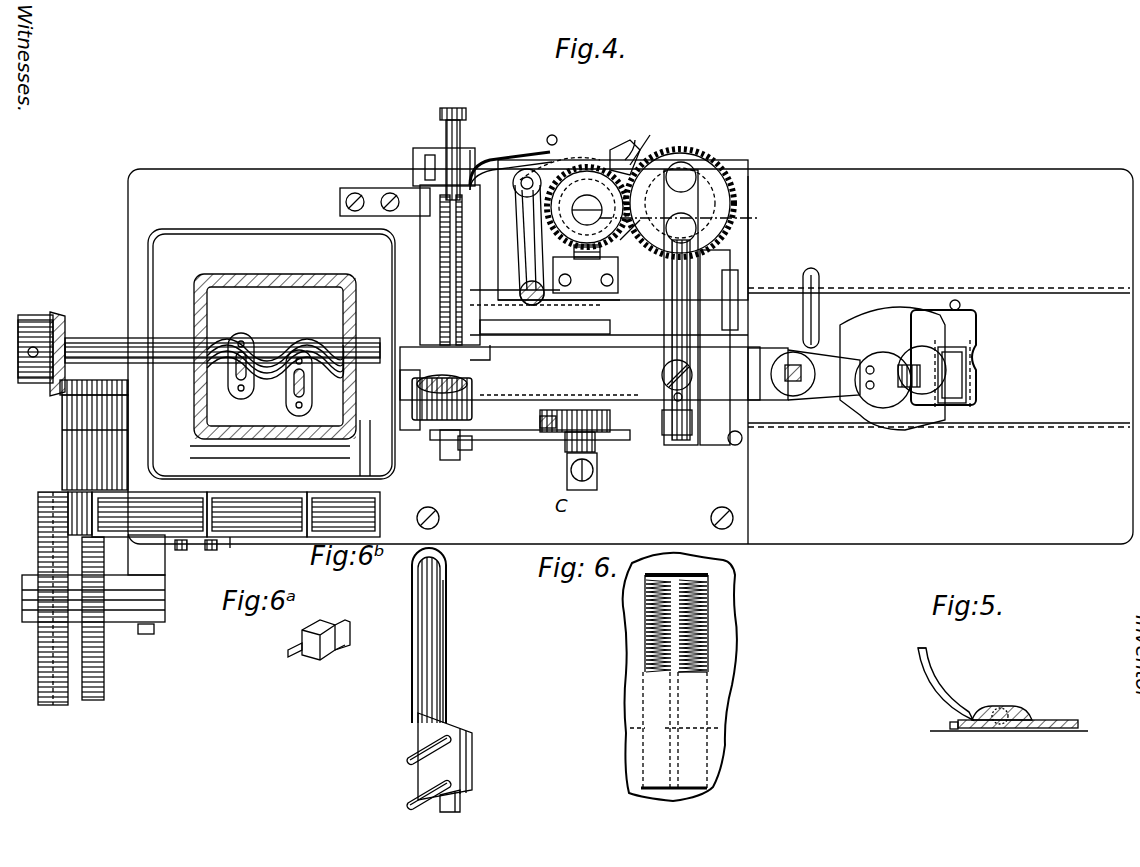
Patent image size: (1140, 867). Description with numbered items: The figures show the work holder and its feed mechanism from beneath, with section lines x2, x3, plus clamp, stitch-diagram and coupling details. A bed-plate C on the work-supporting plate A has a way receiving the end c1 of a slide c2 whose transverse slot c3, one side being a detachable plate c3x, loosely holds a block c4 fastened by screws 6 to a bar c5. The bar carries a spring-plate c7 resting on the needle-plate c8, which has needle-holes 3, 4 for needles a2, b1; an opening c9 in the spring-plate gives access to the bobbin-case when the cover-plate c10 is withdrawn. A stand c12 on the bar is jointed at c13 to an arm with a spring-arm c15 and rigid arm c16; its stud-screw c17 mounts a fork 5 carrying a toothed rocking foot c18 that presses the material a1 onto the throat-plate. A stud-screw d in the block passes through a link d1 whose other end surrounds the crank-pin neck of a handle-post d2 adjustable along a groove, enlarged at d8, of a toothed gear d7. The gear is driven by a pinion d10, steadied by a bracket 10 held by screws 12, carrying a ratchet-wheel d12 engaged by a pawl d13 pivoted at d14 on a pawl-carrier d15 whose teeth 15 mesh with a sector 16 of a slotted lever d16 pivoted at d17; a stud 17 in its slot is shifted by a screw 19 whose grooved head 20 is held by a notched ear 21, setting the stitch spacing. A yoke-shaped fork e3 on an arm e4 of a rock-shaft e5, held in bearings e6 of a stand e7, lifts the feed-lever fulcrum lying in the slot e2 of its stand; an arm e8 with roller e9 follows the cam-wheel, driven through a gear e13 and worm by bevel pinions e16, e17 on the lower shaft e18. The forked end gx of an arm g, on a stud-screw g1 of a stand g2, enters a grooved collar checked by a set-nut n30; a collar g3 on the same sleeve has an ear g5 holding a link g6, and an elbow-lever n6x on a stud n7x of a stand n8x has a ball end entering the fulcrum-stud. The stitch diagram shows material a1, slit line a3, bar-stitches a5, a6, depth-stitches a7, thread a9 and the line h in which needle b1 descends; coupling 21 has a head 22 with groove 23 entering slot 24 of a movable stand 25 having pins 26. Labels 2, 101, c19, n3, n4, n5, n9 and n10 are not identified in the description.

In FIG. 4, the work-supporting plate A is at (855, 180).
In FIG. 4, the bed-plate C is at (390, 240).
In FIG. 4, the top plate 2 is at (612, 302).
In FIG. 4, the needle-hole 3 is at (948, 360).
In FIG. 4, the needle-hole 4 is at (956, 367).
In FIG. 4, the fork 5 is at (920, 410).
In FIG. 5, the fork 5 is at (932, 672).
In FIG. 4, the screw 6 is at (674, 397).
In FIG. 4, the bracket 10 is at (587, 263).
In FIG. 4, the screw 12 is at (595, 276).
In FIG. 4, the teeth 15 is at (588, 200).
In FIG. 4, the sector 16 is at (518, 235).
In FIG. 4, the stud 17 is at (534, 182).
In FIG. 4, the screw 19 is at (452, 108).
In FIG. 4, the annular groove 20 is at (468, 152).
In FIG. 4, the movable coupling 21 is at (437, 150).
In FIG. 6a, the movable coupling 21 is at (302, 640).
In FIG. 6a, the head 22 is at (345, 622).
In FIG. 6a, the groove 23 is at (338, 652).
In FIG. 6b, the slot 24 is at (432, 630).
In FIG. 6b, the movable stand 25 is at (448, 680).
In FIG. 6b, the pins 26 is at (408, 758).
In FIG. 4, the screws 101 is at (440, 518).
In FIG. 4, the stud-screw d is at (662, 378).
In FIG. 4, the link d1 is at (690, 290).
In FIG. 4, the handle-post d2 is at (650, 245).
In FIG. 4, the toothed gear d7 is at (682, 150).
In FIG. 4, the enlargement of groove d8 is at (690, 165).
In FIG. 4, the pinion d10 is at (613, 152).
In FIG. 4, the ratchet-wheel d12 is at (625, 237).
In FIG. 4, the pawl d13 is at (580, 165).
In FIG. 4, the pivot d14 is at (644, 131).
In FIG. 4, the pawl-carrier d15 is at (618, 150).
In FIG. 4, the slotted lever d16 is at (690, 222).
In FIG. 4, the pivot d17 is at (520, 307).
In FIG. 4, the end of slide c1 is at (580, 373).
In FIG. 5, the end of slide c1 is at (955, 731).
In FIG. 4, the slide c2 is at (545, 155).
In FIG. 4, the transverse slot c3 is at (705, 440).
In FIG. 4, the detachable plate c3x is at (735, 446).
In FIG. 4, the block c4 is at (677, 422).
In FIG. 4, the bar c5 is at (725, 300).
In FIG. 4, the spring-plate c7 is at (892, 318).
In FIG. 4, the needle-plate c8 is at (958, 300).
In FIG. 4, the opening c9 is at (878, 400).
In FIG. 4, the cover-plate c10 is at (848, 296).
In FIG. 4, the stand c12 is at (765, 348).
In FIG. 4, the joint c13 is at (762, 395).
In FIG. 4, the spring-arm c15 is at (835, 350).
In FIG. 4, the rigid arm c16 is at (900, 365).
In FIG. 4, the stud-screw c17 is at (972, 374).
In FIG. 4, the rocking open-centered foot c18 is at (972, 362).
In FIG. 5, the cam c19 is at (1028, 712).
In FIG. 4, the slot e2 is at (95, 442).
In FIG. 4, the fork e3 is at (405, 372).
In FIG. 4, the arm e4 is at (367, 435).
In FIG. 4, the rock-shaft e5 is at (257, 500).
In FIG. 4, the bearings e6 is at (170, 492).
In FIG. 4, the stand e7 is at (255, 538).
In FIG. 4, the arm e8 is at (60, 492).
In FIG. 4, the roller e9 is at (332, 500).
In FIG. 4, the gear e13 is at (106, 550).
In FIG. 4, the beveled pinion e16 is at (60, 395).
In FIG. 4, the bevel-pinion e17 is at (62, 318).
In FIG. 4, the lower shaft e18 is at (95, 330).
In FIG. 4, the arm g is at (530, 440).
In FIG. 4, the forked end gx is at (462, 450).
In FIG. 4, the stud-screw g1 is at (565, 450).
In FIG. 4, the stand g2 is at (598, 470).
In FIG. 4, the collar g3 is at (608, 418).
In FIG. 4, the ear g5 is at (542, 420).
In FIG. 4, the link g6 is at (548, 415).
In FIG. 4, the column n3 is at (428, 445).
In FIG. 4, the lug n4 is at (472, 352).
In FIG. 4, the frame window n5 is at (358, 285).
In FIG. 4, the elbow-lever n6x is at (495, 155).
In FIG. 4, the stud n7x is at (393, 192).
In FIG. 4, the stand n8x is at (350, 195).
In FIG. 6b, the block n9 is at (462, 805).
In FIG. 4, the bar n10 is at (540, 326).
In FIG. 4, the set-nut n30 is at (442, 460).
In FIG. 4, the section line x2 is at (688, 210).
In FIG. 4, the section line x3 is at (433, 509).
In FIG. 5, the material a1 is at (962, 720).
In FIG. 6, the needle a2 is at (668, 674).
In FIG. 6, the line of buttonhole-slit a3 is at (676, 706).
In FIG. 6, the bar-stitches a5 is at (705, 578).
In FIG. 6, the bar-stitches a6 is at (708, 788).
In FIG. 6, the depth-stitches a7 is at (650, 618).
In FIG. 6, the thread a9 is at (700, 615).
In FIG. 6, the needle b1 is at (706, 672).
In FIG. 6, the line h is at (655, 730).